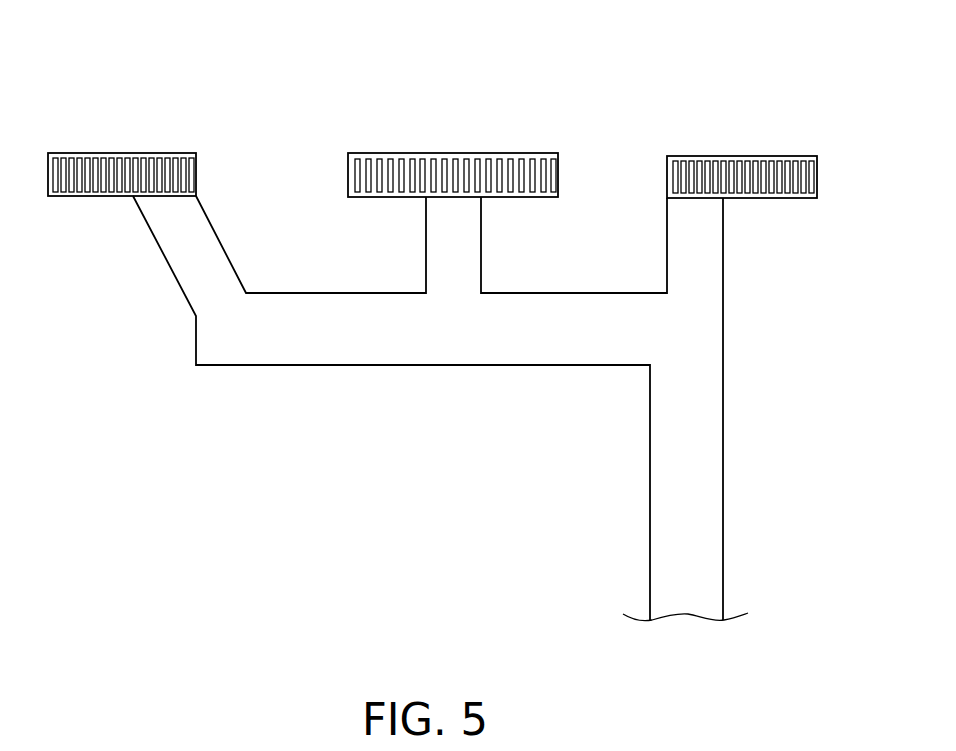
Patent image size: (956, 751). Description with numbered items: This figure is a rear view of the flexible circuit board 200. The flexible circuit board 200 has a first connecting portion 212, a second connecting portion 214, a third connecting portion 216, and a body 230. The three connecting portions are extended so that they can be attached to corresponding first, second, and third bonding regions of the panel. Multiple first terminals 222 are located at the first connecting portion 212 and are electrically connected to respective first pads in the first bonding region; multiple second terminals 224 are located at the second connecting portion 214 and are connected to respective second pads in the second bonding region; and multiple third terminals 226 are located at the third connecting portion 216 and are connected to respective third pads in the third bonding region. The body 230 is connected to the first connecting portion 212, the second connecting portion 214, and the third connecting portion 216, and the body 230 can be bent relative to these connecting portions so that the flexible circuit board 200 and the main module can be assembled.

The flexible circuit board 200 is at (719, 62).
The first connecting portion 212 is at (742, 158).
The second connecting portion 214 is at (474, 157).
The third connecting portion 216 is at (132, 155).
The first terminals 222 is at (778, 161).
The second terminals 224 is at (509, 160).
The third terminals 226 is at (166, 159).
The body 230 is at (667, 507).